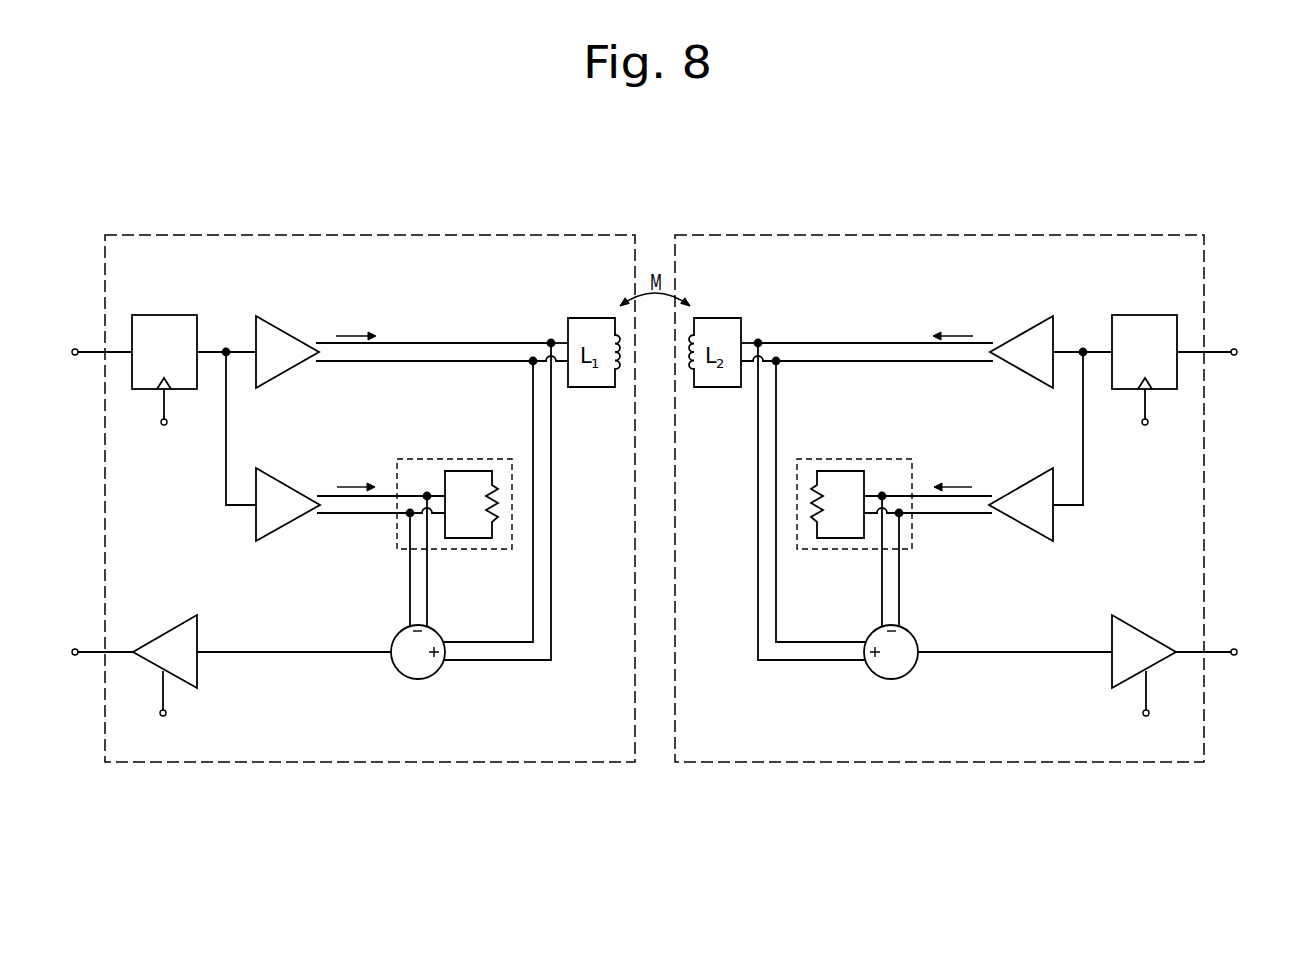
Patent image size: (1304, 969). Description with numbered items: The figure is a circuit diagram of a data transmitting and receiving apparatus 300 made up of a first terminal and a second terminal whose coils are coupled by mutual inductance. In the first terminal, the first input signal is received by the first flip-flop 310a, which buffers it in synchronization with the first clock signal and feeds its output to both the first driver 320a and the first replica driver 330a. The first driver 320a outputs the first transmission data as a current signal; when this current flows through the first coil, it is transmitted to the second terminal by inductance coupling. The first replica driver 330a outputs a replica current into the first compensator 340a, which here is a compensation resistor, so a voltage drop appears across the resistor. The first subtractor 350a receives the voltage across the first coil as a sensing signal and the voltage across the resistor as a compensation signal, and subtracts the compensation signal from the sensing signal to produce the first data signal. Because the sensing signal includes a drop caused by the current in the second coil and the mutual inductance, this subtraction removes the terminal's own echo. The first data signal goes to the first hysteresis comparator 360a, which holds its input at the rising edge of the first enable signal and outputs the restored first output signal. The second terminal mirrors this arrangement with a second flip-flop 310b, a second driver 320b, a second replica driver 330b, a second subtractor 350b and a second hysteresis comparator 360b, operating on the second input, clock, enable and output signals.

The data transmitting and receiving apparatus 300 is at (673, 192).
The first flip-flop 310a is at (157, 315).
The first driver 320a is at (284, 332).
The first replica driver 330a is at (284, 484).
The first compensator 340a is at (465, 459).
The first subtractor 350a is at (417, 681).
The first hysteresis comparator 360a is at (197, 669).
The second flip-flop 310b is at (1152, 315).
The second driver 320b is at (1025, 332).
The second replica driver 330b is at (1025, 484).
The second subtractor 350b is at (844, 459).
The second hysteresis comparator 360b is at (1112, 669).